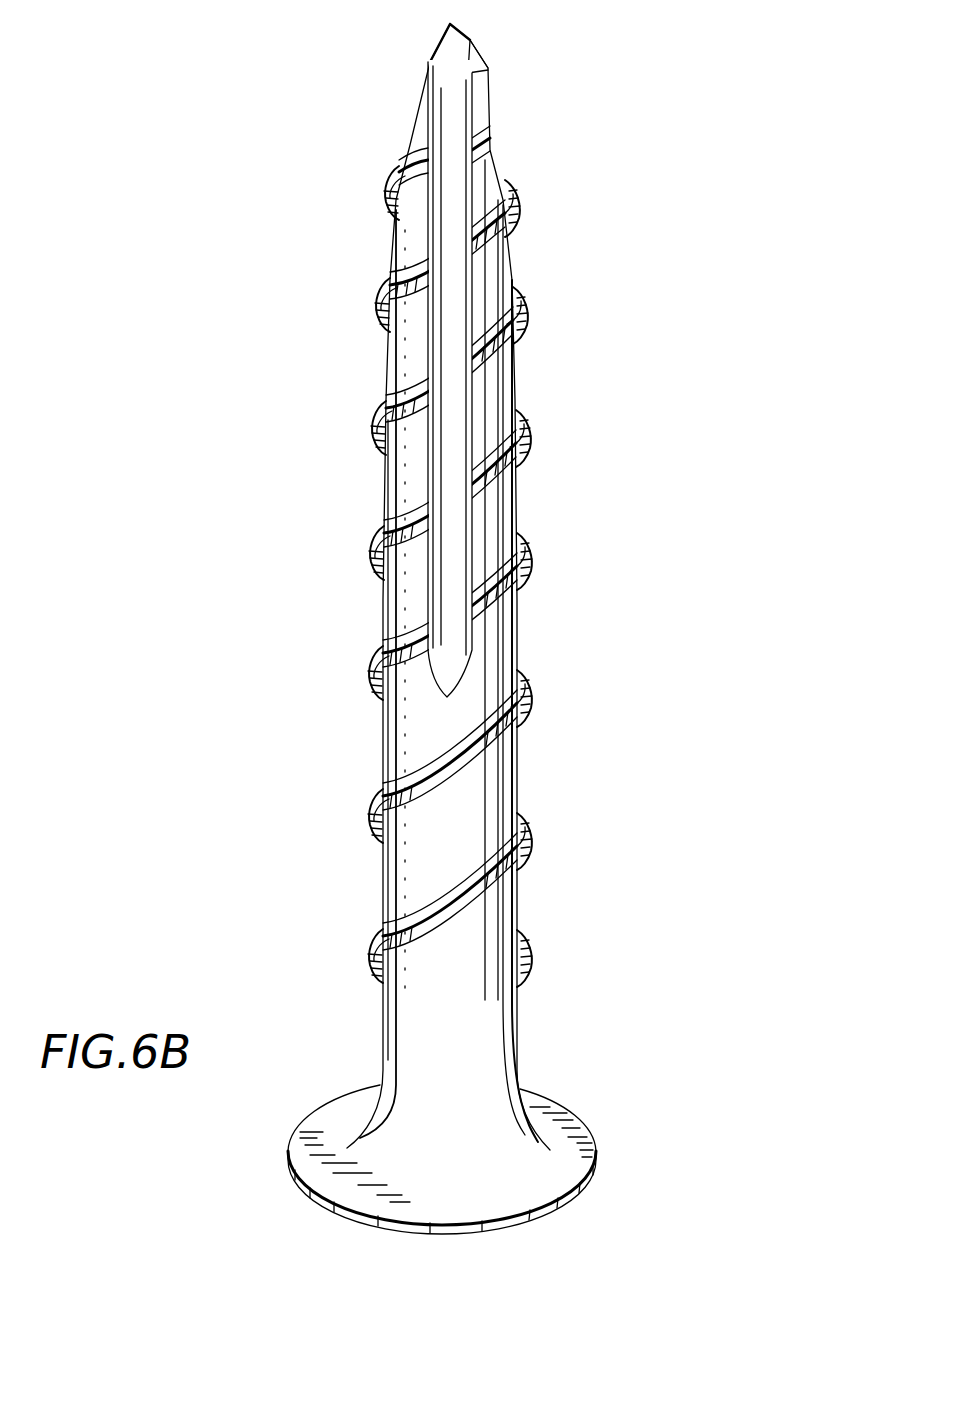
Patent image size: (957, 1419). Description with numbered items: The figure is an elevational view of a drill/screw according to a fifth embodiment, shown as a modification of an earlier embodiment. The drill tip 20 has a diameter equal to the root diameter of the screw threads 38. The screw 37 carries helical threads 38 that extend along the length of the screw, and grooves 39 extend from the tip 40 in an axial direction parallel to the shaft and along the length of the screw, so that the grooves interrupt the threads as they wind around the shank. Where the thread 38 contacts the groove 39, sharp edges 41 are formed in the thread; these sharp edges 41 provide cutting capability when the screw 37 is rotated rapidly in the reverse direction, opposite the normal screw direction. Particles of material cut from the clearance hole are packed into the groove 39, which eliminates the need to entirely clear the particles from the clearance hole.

The drill tip 20 is at (478, 62).
The screw 37 is at (520, 1048).
The helical threads 38 is at (530, 848).
The grooves 39 is at (457, 210).
The tip 40 is at (470, 42).
The sharp edges 41 is at (470, 492).